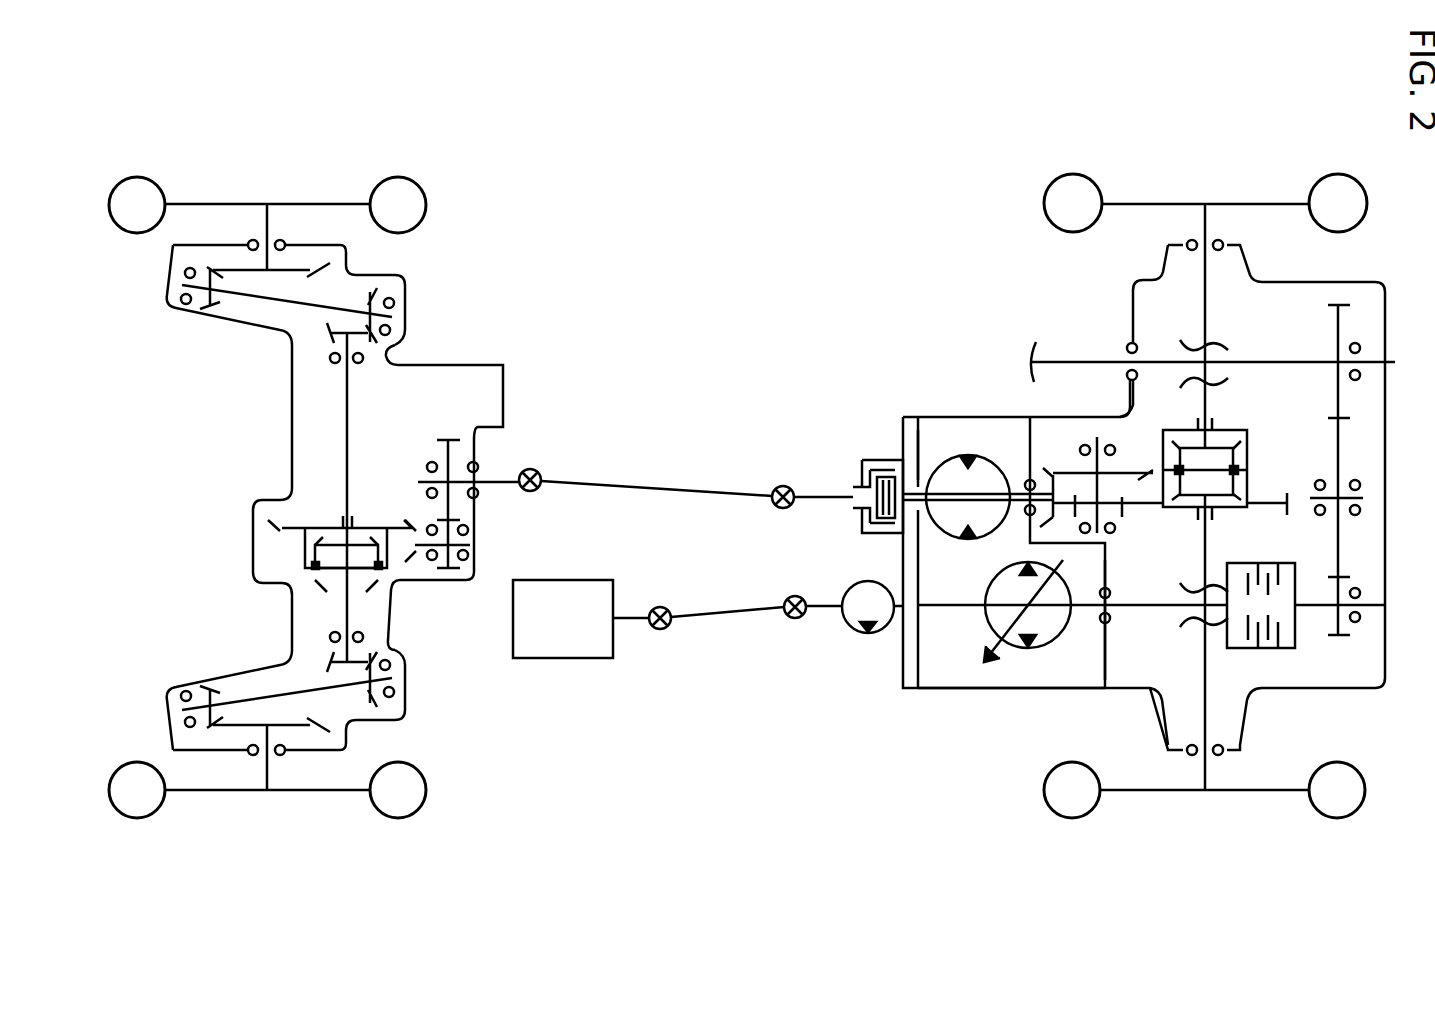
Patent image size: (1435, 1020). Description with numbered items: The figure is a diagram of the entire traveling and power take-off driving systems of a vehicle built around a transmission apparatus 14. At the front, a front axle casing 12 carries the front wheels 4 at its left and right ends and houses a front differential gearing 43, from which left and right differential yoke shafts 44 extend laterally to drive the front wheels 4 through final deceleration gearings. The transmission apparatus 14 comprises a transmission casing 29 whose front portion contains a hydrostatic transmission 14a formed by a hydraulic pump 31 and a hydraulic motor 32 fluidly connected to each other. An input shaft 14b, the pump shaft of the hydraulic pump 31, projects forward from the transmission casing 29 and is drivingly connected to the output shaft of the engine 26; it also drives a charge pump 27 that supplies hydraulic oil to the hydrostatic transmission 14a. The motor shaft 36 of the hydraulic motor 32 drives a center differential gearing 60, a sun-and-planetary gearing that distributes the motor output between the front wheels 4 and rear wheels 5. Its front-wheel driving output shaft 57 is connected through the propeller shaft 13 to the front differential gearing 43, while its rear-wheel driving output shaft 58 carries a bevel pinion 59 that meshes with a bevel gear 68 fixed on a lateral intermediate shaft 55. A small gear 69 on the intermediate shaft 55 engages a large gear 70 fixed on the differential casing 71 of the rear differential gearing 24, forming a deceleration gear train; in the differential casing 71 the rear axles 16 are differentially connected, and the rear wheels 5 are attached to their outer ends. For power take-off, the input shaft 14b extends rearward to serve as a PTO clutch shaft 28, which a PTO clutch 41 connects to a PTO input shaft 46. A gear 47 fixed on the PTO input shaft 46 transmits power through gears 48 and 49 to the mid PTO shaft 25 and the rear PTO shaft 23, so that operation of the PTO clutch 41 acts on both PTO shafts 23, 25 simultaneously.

The front wheels 4 is at (158, 178).
The rear wheels 5 is at (1090, 178).
The front axle casing 12 is at (278, 486).
The propeller shaft 13 is at (667, 488).
The transmission apparatus 14 is at (1016, 730).
The hydrostatic transmission 14a is at (966, 674).
The input shaft 14b is at (820, 603).
The rear axles 16 is at (1203, 310).
The rear PTO shaft 23 is at (1372, 360).
The rear differential gearing 24 is at (1257, 427).
The mid PTO shaft 25 is at (1078, 360).
The engine 26 is at (578, 660).
The charge pump 27 is at (856, 625).
The PTO clutch shaft 28 is at (1135, 612).
The transmission casing 29 is at (1104, 690).
The hydraulic pump 31 is at (984, 625).
The hydraulic motor 32 is at (985, 457).
The motor shaft 36 is at (945, 502).
The PTO clutch 41 is at (1266, 650).
The front differential gearing 43 is at (288, 562).
The differential yoke shafts 44 is at (345, 400).
The PTO input shaft 46 is at (1312, 610).
The gear 47 is at (1350, 628).
The gear 48 is at (1335, 538).
The gear 49 is at (1338, 325).
The intermediate shaft 55 is at (1095, 490).
The front-wheel driving output shaft 57 is at (815, 494).
The rear-wheel driving output shaft 58 is at (913, 490).
The bevel pinion 59 is at (1045, 513).
The center differential gearing 60 is at (886, 464).
The bevel gear 68 is at (1124, 471).
The small gear 69 is at (1112, 509).
The large gear 70 is at (1160, 509).
The differential casing 71 is at (1250, 476).